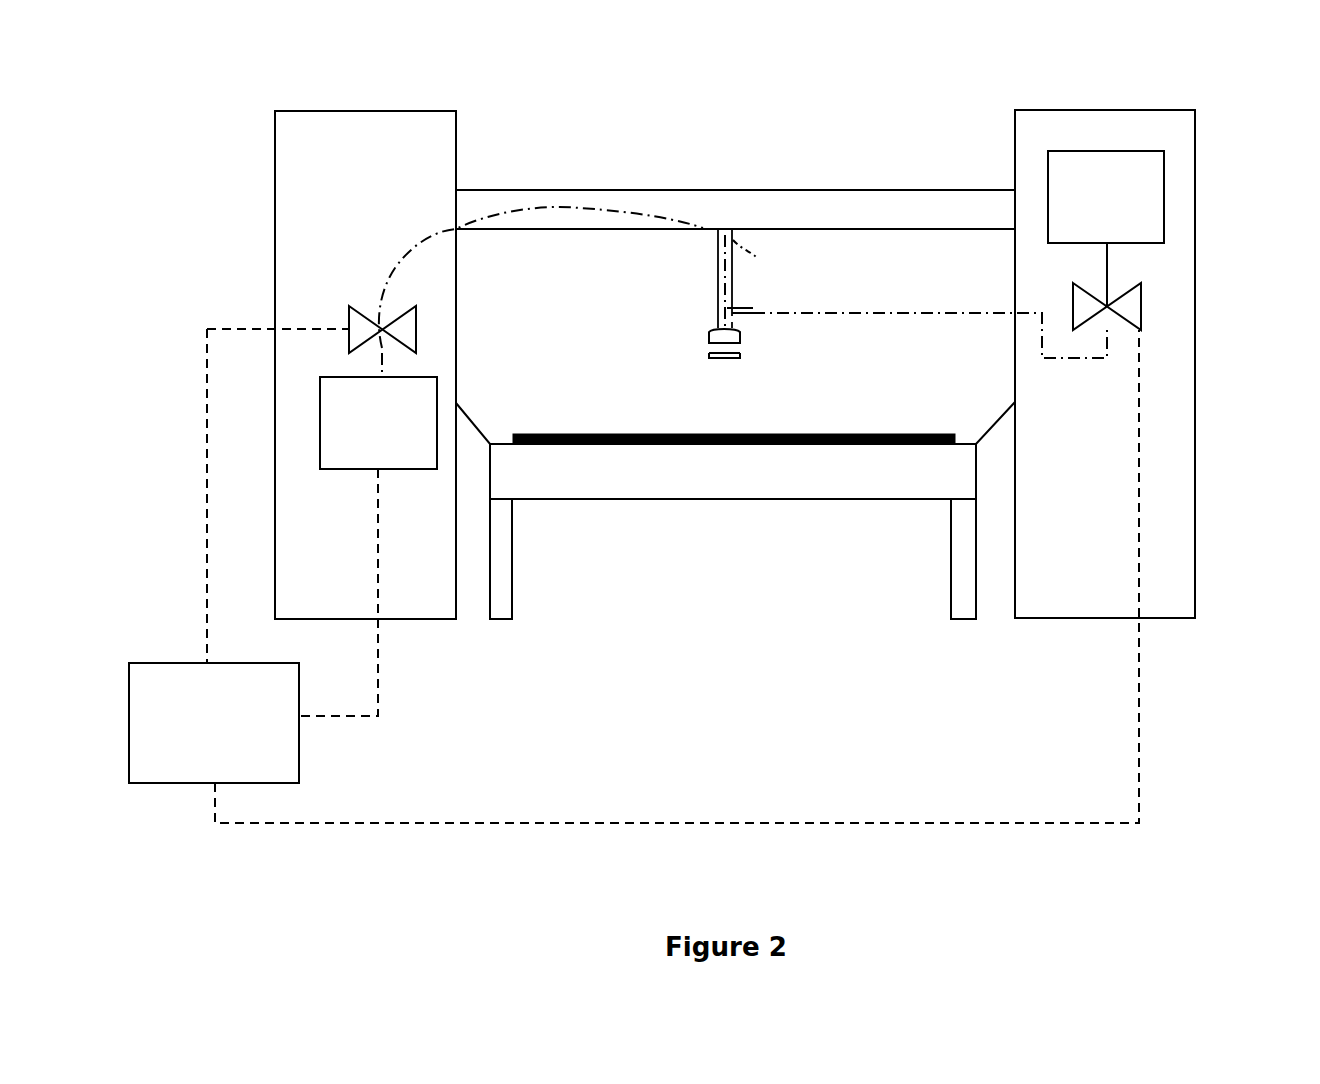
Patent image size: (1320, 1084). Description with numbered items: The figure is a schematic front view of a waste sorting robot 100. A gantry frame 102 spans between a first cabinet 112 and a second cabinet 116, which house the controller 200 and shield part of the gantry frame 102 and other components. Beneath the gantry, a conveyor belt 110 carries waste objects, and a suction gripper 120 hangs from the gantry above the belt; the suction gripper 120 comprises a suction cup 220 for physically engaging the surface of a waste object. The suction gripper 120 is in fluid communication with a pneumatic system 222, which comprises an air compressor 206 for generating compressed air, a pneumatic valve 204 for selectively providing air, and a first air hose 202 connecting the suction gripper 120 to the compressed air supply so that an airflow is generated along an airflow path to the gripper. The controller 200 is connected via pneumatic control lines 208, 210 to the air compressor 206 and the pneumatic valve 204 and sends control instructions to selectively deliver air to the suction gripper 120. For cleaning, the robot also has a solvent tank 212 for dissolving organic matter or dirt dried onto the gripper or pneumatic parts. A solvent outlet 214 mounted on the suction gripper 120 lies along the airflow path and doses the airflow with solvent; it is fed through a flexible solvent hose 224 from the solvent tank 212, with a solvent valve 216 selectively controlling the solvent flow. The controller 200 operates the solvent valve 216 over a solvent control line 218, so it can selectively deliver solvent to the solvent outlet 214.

The waste sorting robot 100 is at (347, 84).
The gantry frame 102 is at (855, 189).
The conveyor belt 110 is at (923, 433).
The first cabinet 112 is at (275, 172).
The second cabinet 116 is at (1110, 110).
The suction gripper 120 is at (709, 342).
The controller 200 is at (230, 731).
The first air hose 202 is at (547, 210).
The pneumatic valve 204 is at (375, 322).
The air compressor 206 is at (396, 436).
The pneumatic control line 208 is at (207, 558).
The pneumatic control line 210 is at (378, 652).
The solvent tank 212 is at (1125, 210).
The solvent outlet 214 is at (742, 308).
The solvent valve 216 is at (1141, 307).
The solvent control line 218 is at (1139, 754).
The suction cup 220 is at (723, 360).
The pneumatic system 222 is at (253, 385).
The solvent hose 224 is at (922, 312).